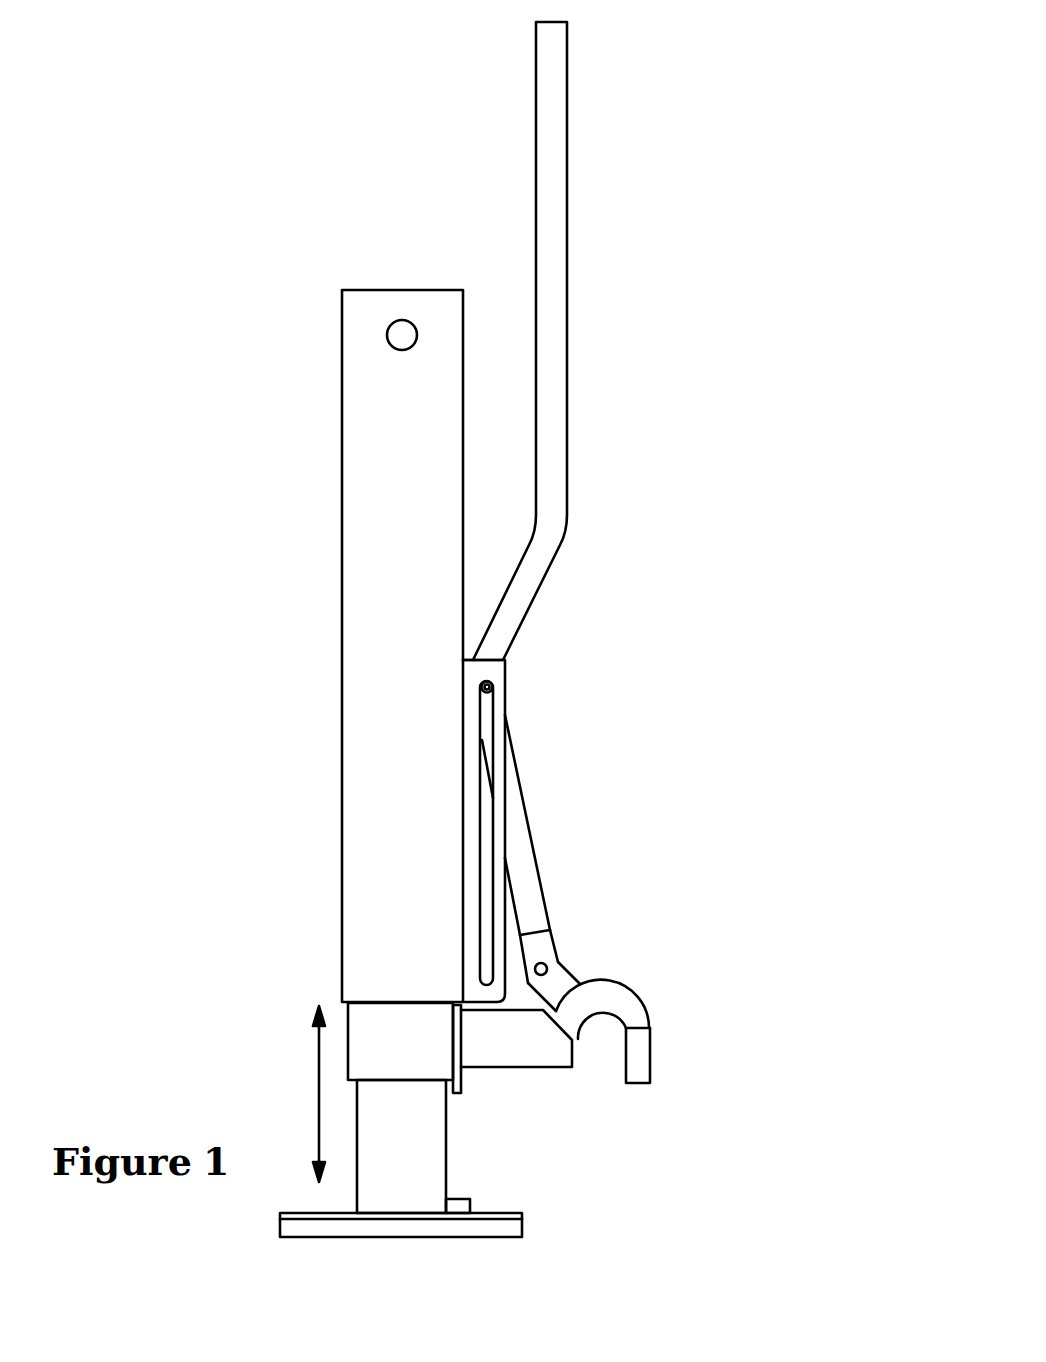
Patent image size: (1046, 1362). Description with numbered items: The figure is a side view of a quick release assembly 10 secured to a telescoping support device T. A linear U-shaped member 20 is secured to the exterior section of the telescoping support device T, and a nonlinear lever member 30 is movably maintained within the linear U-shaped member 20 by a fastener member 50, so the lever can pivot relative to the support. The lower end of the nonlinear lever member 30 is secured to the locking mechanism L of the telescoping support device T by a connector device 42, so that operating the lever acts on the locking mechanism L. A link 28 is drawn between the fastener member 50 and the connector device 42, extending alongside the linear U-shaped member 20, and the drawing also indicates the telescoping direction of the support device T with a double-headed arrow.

The quick release assembly 10 is at (640, 605).
The telescoping support device T is at (140, 522).
The nonlinear lever member 30 is at (550, 368).
The linear U-shaped member 20 is at (497, 678).
The fastener member 50 is at (491, 689).
The link 28 is at (486, 866).
The connector device 42 is at (585, 954).
The locking mechanism L is at (547, 1058).